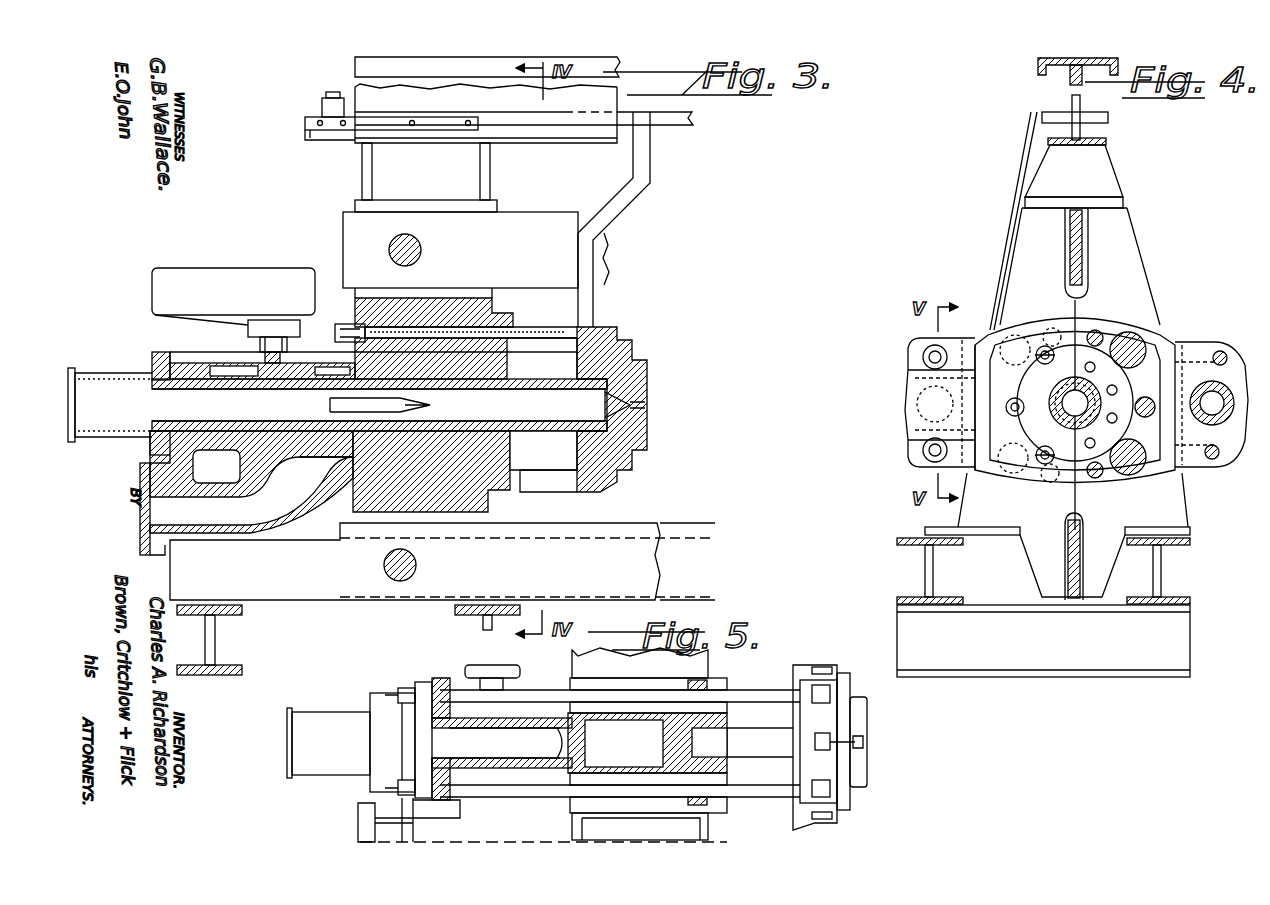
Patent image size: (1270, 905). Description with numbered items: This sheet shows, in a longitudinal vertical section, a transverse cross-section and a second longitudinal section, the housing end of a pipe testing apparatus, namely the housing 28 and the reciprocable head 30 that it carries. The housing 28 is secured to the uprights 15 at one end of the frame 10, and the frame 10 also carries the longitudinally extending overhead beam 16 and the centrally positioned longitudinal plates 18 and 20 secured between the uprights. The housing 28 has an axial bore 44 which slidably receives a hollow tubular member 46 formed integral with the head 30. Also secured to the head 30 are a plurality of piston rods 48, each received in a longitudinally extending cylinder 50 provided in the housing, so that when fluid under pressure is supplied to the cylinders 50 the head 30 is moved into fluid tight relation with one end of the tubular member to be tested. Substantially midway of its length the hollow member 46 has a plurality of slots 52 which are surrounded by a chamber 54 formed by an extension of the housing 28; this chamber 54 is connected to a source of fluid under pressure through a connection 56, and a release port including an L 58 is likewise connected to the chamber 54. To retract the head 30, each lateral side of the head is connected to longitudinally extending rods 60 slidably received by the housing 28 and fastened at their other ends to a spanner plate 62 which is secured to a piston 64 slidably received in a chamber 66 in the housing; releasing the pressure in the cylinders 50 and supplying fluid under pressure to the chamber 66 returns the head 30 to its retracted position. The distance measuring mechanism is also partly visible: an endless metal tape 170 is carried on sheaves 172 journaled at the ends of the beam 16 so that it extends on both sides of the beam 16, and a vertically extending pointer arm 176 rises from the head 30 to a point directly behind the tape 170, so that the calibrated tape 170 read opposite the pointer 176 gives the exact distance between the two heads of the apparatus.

In FIG. 3, the frame 10 is at (300, 603).
In FIG. 3, the uprights 15 is at (473, 176).
In FIG. 3, the overhead beam 16 is at (355, 64).
In FIG. 3, the plate 18 is at (558, 220).
In FIG. 4, the plate 18 is at (1085, 225).
In FIG. 3, the plate 20 is at (587, 523).
In FIG. 3, the housing 28 is at (492, 306).
In FIG. 3, the head 30 is at (615, 327).
In FIG. 5, the head 30 is at (836, 668).
In FIG. 4, the head 30 is at (990, 333).
In FIG. 3, the axial bore 44 is at (452, 437).
In FIG. 3, the hollow tubular member 46 is at (551, 382).
In FIG. 4, the hollow tubular member 46 is at (1092, 400).
In FIG. 3, the piston rods 48 is at (544, 345).
In FIG. 4, the piston rods 48 is at (1045, 330).
In FIG. 3, the cylinders 50 is at (432, 330).
In FIG. 4, the cylinders 50 is at (1046, 347).
In FIG. 3, the slots 52 is at (400, 402).
In FIG. 3, the chamber 54 is at (310, 372).
In FIG. 3, the connection 56 is at (243, 268).
In FIG. 3, the L 58 is at (144, 555).
In FIG. 5, the rods 60 is at (756, 690).
In FIG. 4, the rods 60 is at (922, 357).
In FIG. 5, the spanner plate 62 is at (422, 715).
In FIG. 5, the piston 64 is at (507, 745).
In FIG. 5, the chamber 66 is at (563, 750).
In FIG. 3, the endless metal tape 170 is at (686, 118).
In FIG. 4, the endless metal tape 170 is at (1110, 118).
In FIG. 3, the sheaves 172 is at (312, 113).
In FIG. 3, the pointer arm 176 is at (643, 183).
In FIG. 4, the pointer arm 176 is at (1032, 120).